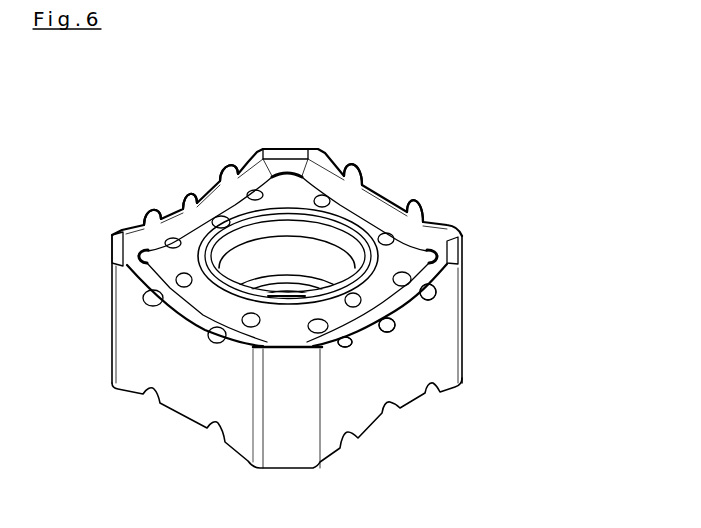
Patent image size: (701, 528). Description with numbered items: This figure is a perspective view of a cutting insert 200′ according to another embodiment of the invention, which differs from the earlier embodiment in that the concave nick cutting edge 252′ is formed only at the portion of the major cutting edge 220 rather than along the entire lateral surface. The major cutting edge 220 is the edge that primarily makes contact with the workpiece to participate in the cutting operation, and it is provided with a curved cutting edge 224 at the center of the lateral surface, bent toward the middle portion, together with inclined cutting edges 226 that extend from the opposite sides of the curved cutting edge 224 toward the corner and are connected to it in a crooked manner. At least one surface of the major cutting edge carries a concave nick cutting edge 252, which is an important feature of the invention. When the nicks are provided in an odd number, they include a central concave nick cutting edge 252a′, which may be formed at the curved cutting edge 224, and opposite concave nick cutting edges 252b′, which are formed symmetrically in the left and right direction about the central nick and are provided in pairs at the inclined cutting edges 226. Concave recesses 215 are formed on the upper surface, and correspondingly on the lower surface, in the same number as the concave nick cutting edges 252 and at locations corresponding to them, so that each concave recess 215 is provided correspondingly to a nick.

The cutting insert 200′ is at (398, 166).
The major cutting edge 220 is at (181, 106).
The curved cutting edge 224 is at (195, 196).
The inclined cutting edge 226 is at (191, 201).
The concave recess 215 is at (172, 275).
The concave nick cutting edge 252 is at (552, 294).
The concave nick cutting edge 252′ is at (146, 298).
The central concave nick cutting edge 252a′ is at (396, 324).
The opposite concave nick cutting edge 252b′ is at (436, 292).